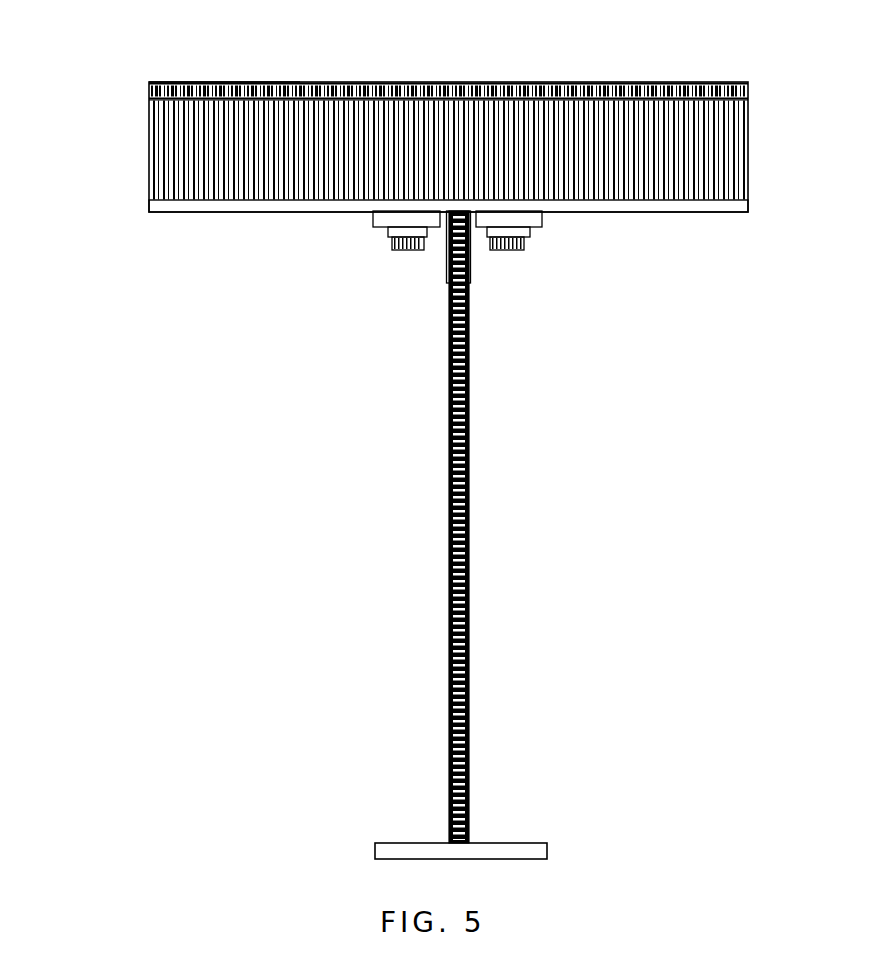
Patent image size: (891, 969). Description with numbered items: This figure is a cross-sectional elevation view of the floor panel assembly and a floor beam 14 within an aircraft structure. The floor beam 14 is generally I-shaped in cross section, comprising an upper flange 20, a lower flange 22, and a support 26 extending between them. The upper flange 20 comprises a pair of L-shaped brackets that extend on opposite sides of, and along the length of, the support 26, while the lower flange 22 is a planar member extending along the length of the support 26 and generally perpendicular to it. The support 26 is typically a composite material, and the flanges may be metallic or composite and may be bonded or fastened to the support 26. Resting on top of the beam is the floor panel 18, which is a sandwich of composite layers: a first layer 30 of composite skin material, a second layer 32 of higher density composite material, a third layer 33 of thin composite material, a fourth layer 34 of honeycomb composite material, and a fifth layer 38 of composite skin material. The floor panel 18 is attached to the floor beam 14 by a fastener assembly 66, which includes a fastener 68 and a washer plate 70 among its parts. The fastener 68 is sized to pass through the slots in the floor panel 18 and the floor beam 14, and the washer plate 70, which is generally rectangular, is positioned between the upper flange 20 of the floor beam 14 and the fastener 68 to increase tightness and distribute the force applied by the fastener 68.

The floor beam 14 is at (479, 665).
The floor panel 18 is at (762, 157).
The upper flange 20 is at (446, 265).
The lower flange 22 is at (525, 849).
The support 26 is at (468, 537).
The first layer 30 is at (698, 82).
The second layer 32 is at (748, 90).
The third layer 33 is at (153, 102).
The fourth layer 34 is at (732, 175).
The fifth layer 38 is at (695, 205).
The fastener assembly 66 is at (537, 243).
The fastener 68 is at (412, 252).
The washer plate 70 is at (380, 223).